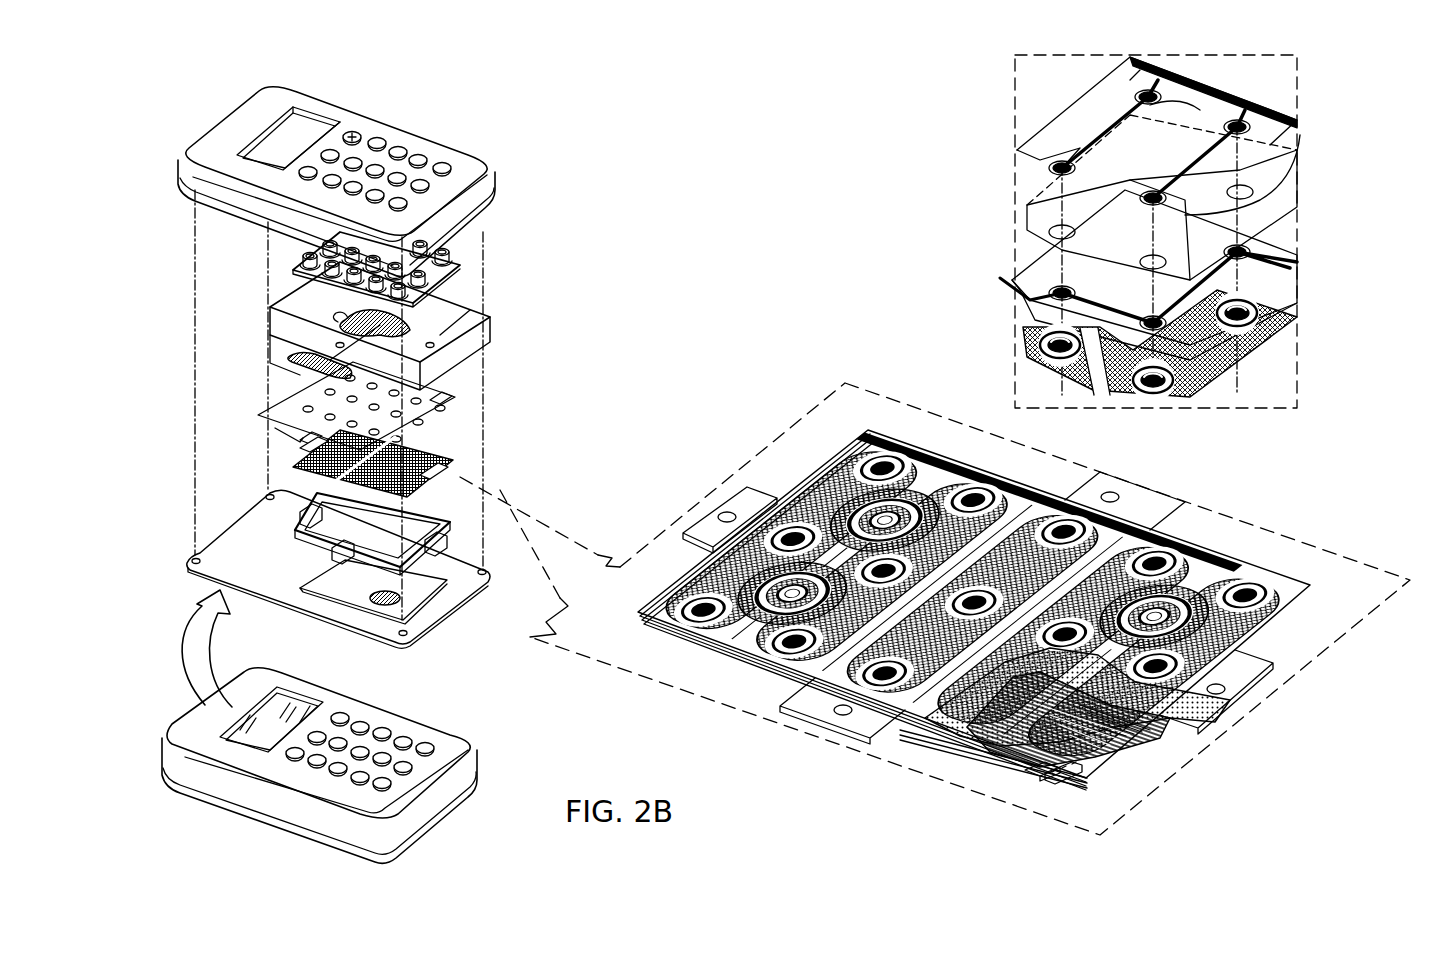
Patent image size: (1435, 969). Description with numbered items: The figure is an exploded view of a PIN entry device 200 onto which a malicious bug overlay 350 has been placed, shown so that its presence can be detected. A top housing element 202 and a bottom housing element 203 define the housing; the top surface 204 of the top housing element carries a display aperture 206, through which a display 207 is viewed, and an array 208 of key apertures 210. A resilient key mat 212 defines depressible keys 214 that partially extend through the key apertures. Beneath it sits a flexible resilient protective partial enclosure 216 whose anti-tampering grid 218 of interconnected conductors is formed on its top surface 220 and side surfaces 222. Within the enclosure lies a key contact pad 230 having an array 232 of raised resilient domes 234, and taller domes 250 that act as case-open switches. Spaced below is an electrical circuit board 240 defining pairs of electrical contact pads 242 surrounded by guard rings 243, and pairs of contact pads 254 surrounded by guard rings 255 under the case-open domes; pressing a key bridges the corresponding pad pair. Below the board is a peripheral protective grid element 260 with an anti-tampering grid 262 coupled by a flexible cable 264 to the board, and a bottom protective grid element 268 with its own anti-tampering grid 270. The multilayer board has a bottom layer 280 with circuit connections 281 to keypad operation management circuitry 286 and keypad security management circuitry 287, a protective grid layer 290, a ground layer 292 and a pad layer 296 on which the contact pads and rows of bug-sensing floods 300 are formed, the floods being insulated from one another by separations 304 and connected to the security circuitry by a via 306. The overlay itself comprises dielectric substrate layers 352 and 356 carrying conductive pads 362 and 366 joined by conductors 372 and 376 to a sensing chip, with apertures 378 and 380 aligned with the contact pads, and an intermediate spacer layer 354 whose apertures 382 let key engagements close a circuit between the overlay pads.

The PIN entry device 200 is at (222, 368).
The top housing element 202 is at (236, 125).
The bottom housing element 203 is at (485, 790).
The top surface 204 is at (462, 150).
The display aperture 206 is at (300, 128).
The display 207 is at (290, 703).
The array of key apertures 208 is at (400, 140).
The key apertures 210 is at (376, 138).
The key mat 212 is at (455, 272).
The depressible keys 214 is at (306, 262).
The flexible resilient protective partial enclosure 216 is at (283, 328).
The anti-tampering grid 218 is at (372, 333).
The top surface 220 is at (462, 332).
The side surfaces 222 is at (290, 357).
The key contact pad 230 is at (300, 405).
The array of raised resilient domes 232 is at (302, 455).
The raised resilient domes 234 is at (302, 434).
The electrical circuit board 240 is at (450, 462).
The electrical contact pads 242 is at (750, 664).
The guard rings 243 is at (1042, 480).
The raised resilient dome 250 is at (445, 415).
The electrical contact pads 254 is at (985, 478).
The guard rings 255 is at (718, 545).
The peripheral protective grid element 260 is at (448, 508).
The anti-tampering grid 262 is at (312, 512).
The flexible cable 264 is at (332, 552).
The bottom protective grid element 268 is at (438, 605).
The anti-tampering grid 270 is at (370, 598).
The bottom layer 280 is at (1115, 765).
The circuit connections 281 is at (1140, 733).
The keypad operation management circuitry 286 is at (1035, 776).
The keypad security management circuitry 287 is at (1070, 782).
The protective grid layer 290 is at (968, 745).
The ground layer 292 is at (915, 738).
The pad layer 296 is at (868, 740).
The bug-sensing floods 300 is at (1080, 478).
The separations 304 is at (712, 660).
The via 306 is at (1128, 490).
The malicious bug overlay 350 is at (790, 487).
The dielectric substrate layer 352 is at (1040, 306).
The spacer layer 354 is at (1295, 212).
The dielectric substrate layer 356 is at (1060, 128).
The conductive pads 362 is at (1262, 290).
The conductive pads 366 is at (1280, 130).
The conductors 372 is at (1268, 306).
The conductors 376 is at (1118, 120).
The apertures 378 is at (1030, 292).
The apertures 380 is at (1048, 168).
The apertures 382 is at (1262, 188).